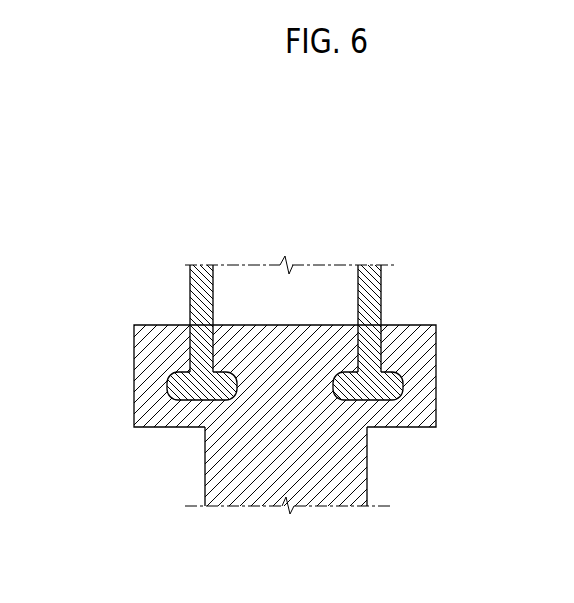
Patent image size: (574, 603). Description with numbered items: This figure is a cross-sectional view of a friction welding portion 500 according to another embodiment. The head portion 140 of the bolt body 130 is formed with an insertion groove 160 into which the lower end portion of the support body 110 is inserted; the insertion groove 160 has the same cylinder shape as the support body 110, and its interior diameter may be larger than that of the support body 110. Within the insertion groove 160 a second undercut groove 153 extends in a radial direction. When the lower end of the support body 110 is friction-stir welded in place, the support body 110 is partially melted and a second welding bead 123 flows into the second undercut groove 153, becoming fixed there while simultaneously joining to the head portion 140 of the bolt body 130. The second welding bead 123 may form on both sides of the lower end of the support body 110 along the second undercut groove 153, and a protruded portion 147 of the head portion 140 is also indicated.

The friction welding portion 500 is at (298, 212).
The support body 110 is at (372, 283).
The second welding bead 123 is at (397, 382).
The bolt body 130 is at (217, 470).
The head portion 140 is at (126, 336).
The protruded portion 147 is at (245, 338).
The second undercut groove 153 is at (177, 397).
The insertion groove 160 is at (189, 323).